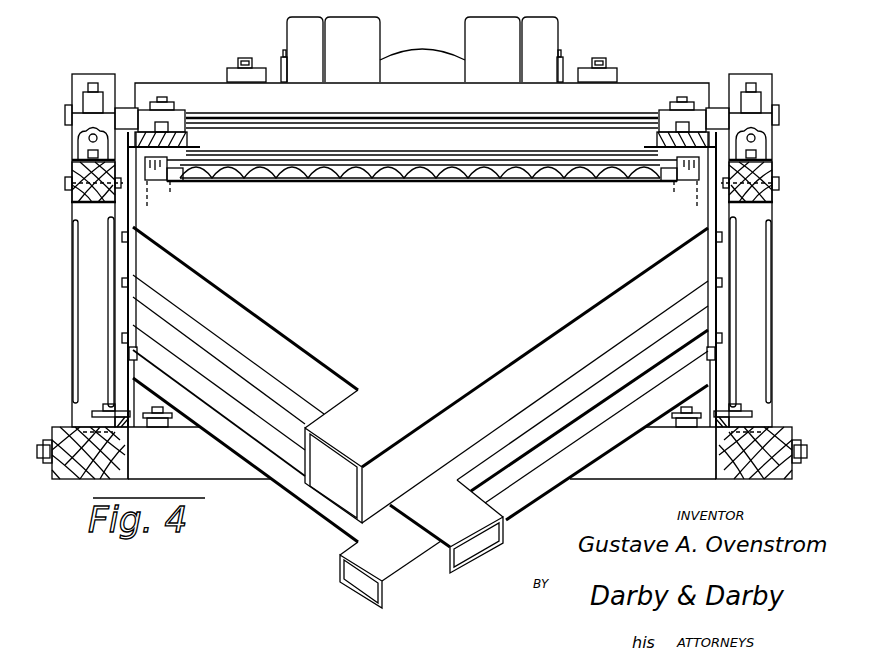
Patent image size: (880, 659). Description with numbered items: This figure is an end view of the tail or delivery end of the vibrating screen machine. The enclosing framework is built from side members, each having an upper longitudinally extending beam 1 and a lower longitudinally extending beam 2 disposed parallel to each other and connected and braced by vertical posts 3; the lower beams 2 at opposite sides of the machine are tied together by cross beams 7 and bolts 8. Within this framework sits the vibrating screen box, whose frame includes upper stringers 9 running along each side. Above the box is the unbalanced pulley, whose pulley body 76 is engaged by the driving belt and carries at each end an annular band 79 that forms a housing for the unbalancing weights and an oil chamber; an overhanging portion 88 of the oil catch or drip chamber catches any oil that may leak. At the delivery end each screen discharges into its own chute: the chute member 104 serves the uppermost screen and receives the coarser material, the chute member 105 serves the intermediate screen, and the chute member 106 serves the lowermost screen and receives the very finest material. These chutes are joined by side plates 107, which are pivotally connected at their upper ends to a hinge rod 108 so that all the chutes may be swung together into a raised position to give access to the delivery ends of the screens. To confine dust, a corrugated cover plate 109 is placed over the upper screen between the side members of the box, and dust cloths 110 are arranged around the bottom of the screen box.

The upper longitudinally extending beam 1 is at (67, 205).
The lower longitudinally extending beam 2 is at (52, 431).
The vertical post 3 is at (83, 307).
The cross beam 7 is at (638, 471).
The bolt 8 is at (422, 462).
The upper stringer 9 is at (190, 142).
The pulley body 76 is at (417, 60).
The annular band 79 is at (358, 23).
The overhanging portion 88 is at (308, 25).
The chute member 104 is at (330, 485).
The chute member 105 is at (478, 541).
The chute member 106 is at (355, 578).
The side plate 107 is at (127, 262).
The hinge rod 108 is at (558, 157).
The cover plate 109 is at (427, 182).
The dust cloth 110 is at (126, 395).